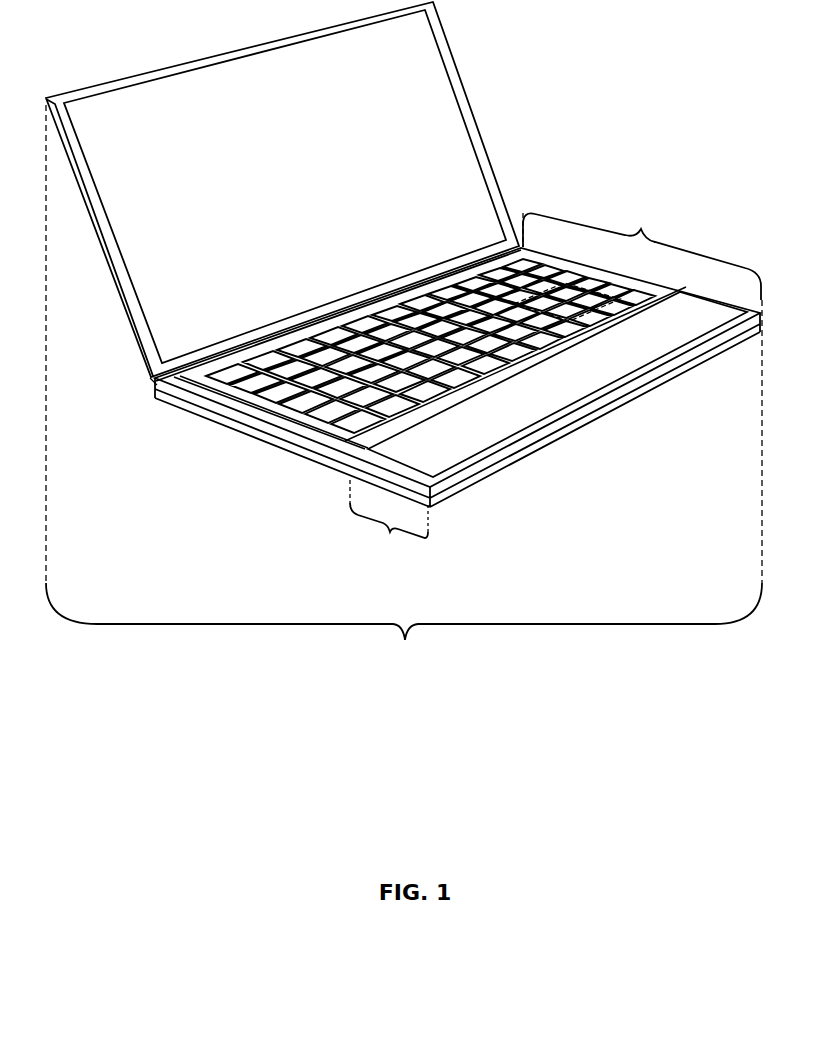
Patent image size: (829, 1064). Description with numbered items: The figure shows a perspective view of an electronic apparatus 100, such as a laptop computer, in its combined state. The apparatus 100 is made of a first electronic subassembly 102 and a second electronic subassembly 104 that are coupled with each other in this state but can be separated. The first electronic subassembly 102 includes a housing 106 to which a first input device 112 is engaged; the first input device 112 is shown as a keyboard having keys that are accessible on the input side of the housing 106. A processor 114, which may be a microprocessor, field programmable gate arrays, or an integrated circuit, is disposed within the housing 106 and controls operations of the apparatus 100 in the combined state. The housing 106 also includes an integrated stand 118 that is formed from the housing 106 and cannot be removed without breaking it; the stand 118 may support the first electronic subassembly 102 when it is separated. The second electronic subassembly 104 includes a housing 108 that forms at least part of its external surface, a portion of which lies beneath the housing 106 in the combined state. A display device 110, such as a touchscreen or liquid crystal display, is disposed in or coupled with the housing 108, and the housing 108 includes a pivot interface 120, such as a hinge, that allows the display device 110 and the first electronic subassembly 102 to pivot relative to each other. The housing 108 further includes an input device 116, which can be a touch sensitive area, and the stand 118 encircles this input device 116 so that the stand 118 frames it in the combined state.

The electronic apparatus 100 is at (623, 63).
The first electronic subassembly 102 is at (641, 229).
The second electronic subassembly 104 is at (405, 640).
The housing 106 is at (264, 427).
The housing 108 is at (293, 448).
The display device 110 is at (168, 272).
The first input device 112 is at (332, 364).
The processor 114 is at (592, 300).
The input device 116 is at (503, 415).
The integrated stand 118 is at (390, 532).
The pivot interface 120 is at (150, 380).